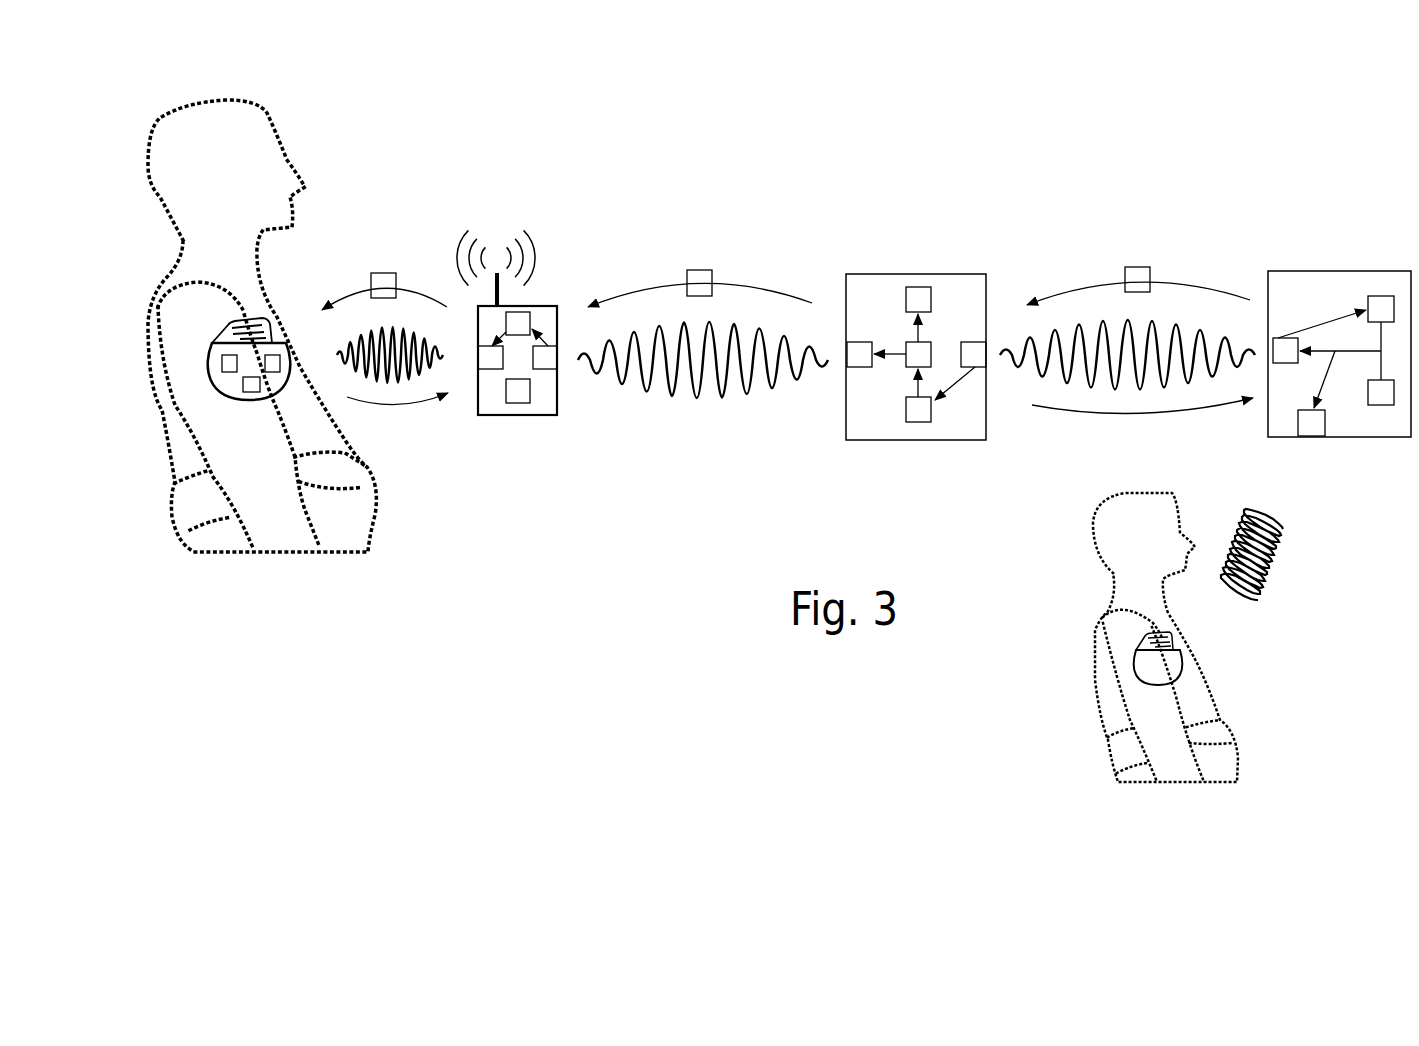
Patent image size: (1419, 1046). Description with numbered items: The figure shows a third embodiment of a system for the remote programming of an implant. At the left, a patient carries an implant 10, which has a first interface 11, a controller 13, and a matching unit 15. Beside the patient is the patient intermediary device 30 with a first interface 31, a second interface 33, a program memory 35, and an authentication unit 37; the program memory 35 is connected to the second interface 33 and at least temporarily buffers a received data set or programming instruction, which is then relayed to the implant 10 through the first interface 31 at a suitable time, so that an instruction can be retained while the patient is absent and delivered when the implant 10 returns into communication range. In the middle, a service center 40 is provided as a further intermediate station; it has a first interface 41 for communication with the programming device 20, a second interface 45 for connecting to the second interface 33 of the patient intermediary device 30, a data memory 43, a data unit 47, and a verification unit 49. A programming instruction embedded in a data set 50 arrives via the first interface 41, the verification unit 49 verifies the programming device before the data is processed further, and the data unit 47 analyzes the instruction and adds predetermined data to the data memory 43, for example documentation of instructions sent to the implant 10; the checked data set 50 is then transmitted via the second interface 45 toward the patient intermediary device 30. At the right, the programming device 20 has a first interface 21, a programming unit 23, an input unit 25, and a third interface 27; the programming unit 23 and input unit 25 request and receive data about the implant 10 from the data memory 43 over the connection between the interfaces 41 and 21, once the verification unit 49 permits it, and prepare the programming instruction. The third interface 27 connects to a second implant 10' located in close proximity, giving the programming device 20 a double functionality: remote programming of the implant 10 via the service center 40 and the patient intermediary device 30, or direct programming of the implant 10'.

The implant 10 is at (247, 356).
The implant 10' is at (1106, 659).
The first interface 11 is at (260, 386).
The controller 13 is at (273, 355).
The matching unit 15 is at (226, 355).
The programming device 20 is at (1310, 342).
The first interface 21 is at (1287, 363).
The programming unit 23 is at (1383, 296).
The input unit 25 is at (1387, 405).
The third interface 27 is at (1302, 433).
The patient intermediary device 30 is at (535, 365).
The first interface 31 is at (493, 373).
The second interface 33 is at (540, 370).
The program memory 35 is at (533, 313).
The authentication unit 37 is at (517, 403).
The service center 40 is at (894, 365).
The first interface 41 is at (977, 367).
The data memory 43 is at (922, 287).
The second interface 45 is at (867, 367).
The data unit 47 is at (907, 342).
The verification unit 49 is at (925, 422).
The data set 50 is at (383, 273).